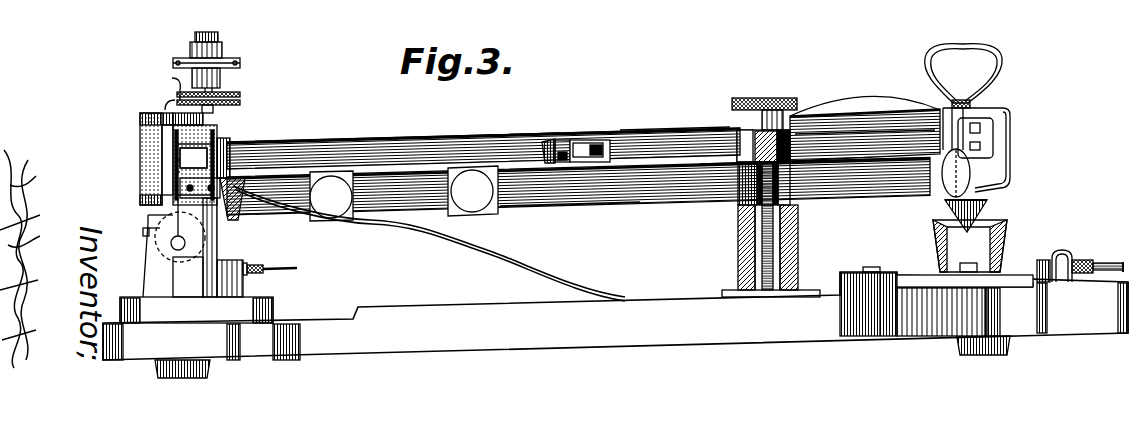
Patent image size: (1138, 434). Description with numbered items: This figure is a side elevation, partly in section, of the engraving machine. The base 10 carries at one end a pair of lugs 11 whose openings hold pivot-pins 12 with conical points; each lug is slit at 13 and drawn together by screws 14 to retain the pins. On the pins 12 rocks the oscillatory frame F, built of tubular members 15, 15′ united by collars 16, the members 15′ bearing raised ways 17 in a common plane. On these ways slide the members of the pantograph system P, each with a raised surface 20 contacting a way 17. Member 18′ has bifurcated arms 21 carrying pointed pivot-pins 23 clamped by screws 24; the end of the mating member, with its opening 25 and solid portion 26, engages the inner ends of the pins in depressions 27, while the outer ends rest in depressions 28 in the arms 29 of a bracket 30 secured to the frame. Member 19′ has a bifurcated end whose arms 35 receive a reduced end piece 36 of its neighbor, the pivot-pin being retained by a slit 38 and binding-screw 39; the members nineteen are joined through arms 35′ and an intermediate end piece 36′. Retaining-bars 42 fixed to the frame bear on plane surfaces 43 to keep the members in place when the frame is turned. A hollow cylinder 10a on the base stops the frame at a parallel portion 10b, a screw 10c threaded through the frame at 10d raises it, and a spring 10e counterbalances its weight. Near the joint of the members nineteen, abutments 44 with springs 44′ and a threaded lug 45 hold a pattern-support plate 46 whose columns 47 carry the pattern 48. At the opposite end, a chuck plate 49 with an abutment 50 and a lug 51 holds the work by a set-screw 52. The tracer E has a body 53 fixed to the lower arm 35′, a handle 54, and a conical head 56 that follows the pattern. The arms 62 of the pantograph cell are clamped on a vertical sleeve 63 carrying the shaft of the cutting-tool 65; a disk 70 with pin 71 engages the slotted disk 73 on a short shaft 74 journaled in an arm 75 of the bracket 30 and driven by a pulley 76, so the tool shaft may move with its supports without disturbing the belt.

The base 10 is at (615, 325).
The hollow cylinder 10a is at (738, 242).
The parallel portion of the frame 10b is at (738, 207).
The screw 10c is at (765, 262).
The threaded portion of the frame 10d is at (750, 132).
The spring 10e is at (522, 270).
The lugs 11 is at (158, 272).
The pivot-pins 12 is at (176, 245).
The slit 13 is at (206, 198).
The screws 14 is at (148, 232).
The tubular members 15 is at (647, 210).
The tubular frame members with ways 15′ is at (872, 190).
The collars 16 is at (347, 222).
The raised ways 17 is at (411, 173).
The pantograph member 18′ is at (500, 114).
The pantograph member 19′ is at (684, 130).
The raised surface 20 is at (822, 153).
The bifurcated arms 21 is at (236, 133).
The pivot-pins 23 is at (176, 144).
The screws 24 is at (165, 120).
The opening 25 is at (174, 171).
The solid portion 26 is at (175, 160).
The depressions 27 is at (244, 142).
The depressions 28 is at (171, 112).
The arms 29 is at (150, 128).
The bracket 30 is at (138, 134).
The arms 35 is at (592, 142).
The arms 35′ is at (1000, 130).
The reduced end piece 36 is at (566, 140).
The intermediate end piece 36′ is at (975, 128).
The slit 38 is at (548, 142).
The binding-screw 39 is at (576, 140).
The retaining-bars 42 is at (891, 104).
The plane surfaces 43 is at (911, 135).
The abutments 44 is at (886, 272).
The springs 44′ is at (868, 267).
The threaded lug 45 is at (1062, 250).
The plate 46 is at (1010, 278).
The columns or projections 47 is at (937, 255).
The pattern 48 is at (981, 207).
The plate 49 is at (274, 306).
The abutment 50 is at (180, 272).
The lug 51 is at (241, 264).
The set-screw 52 is at (289, 266).
The body 53 is at (1012, 160).
The handle 54 is at (995, 63).
The head 56 is at (948, 208).
The arms 62 is at (220, 132).
The vertical sleeve 63 is at (216, 109).
The cutting-tool 65 is at (216, 238).
The disk or plate 70 is at (242, 102).
The pin 71 is at (225, 96).
The disk or plate 73 is at (245, 91).
The short shaft 74 is at (207, 33).
The arm 75 is at (172, 95).
The pulley 76 is at (231, 60).
The pattern follower or tracer E is at (963, 61).
The oscillatory frame F is at (570, 217).
The pantograph system P is at (675, 121).